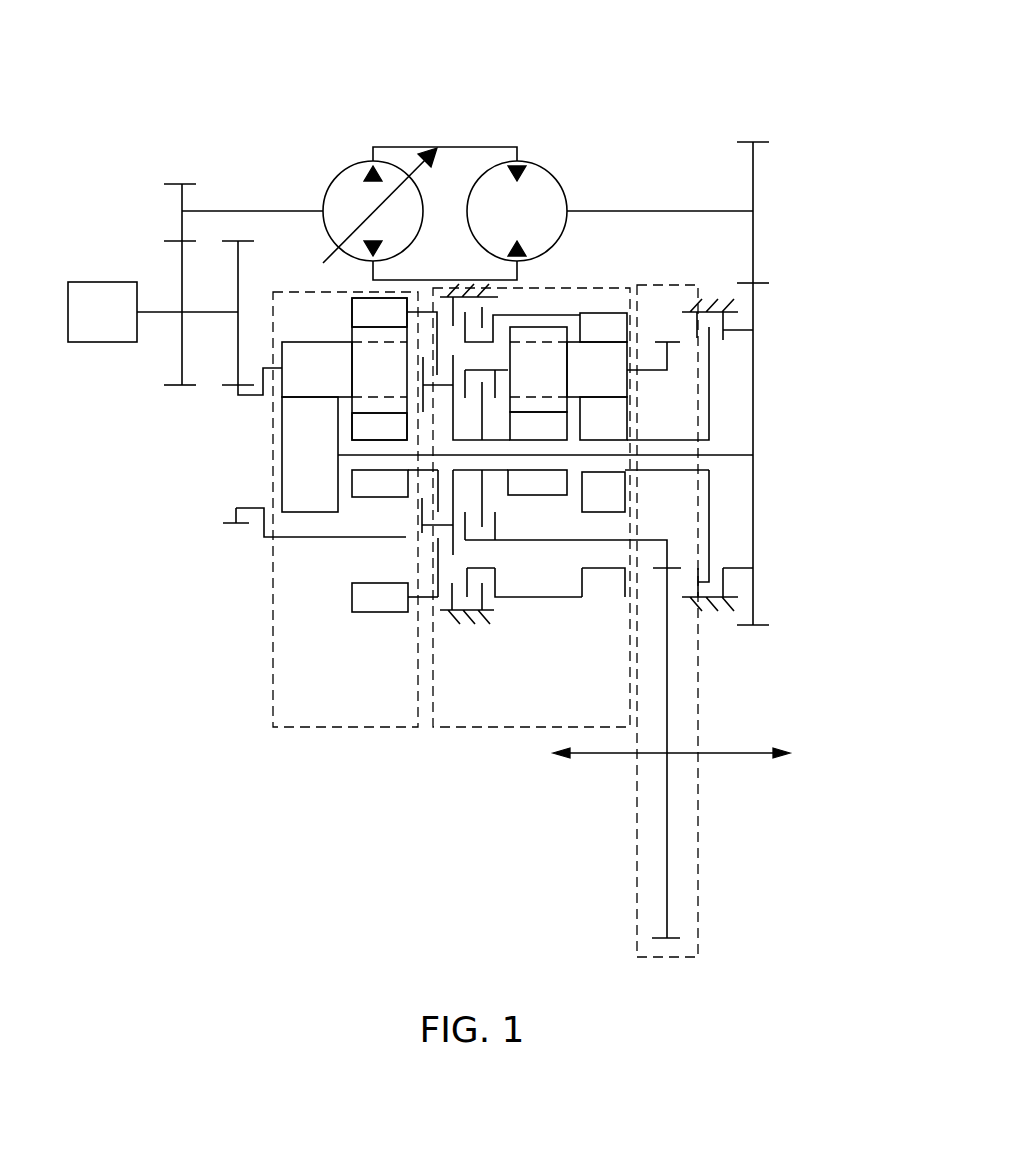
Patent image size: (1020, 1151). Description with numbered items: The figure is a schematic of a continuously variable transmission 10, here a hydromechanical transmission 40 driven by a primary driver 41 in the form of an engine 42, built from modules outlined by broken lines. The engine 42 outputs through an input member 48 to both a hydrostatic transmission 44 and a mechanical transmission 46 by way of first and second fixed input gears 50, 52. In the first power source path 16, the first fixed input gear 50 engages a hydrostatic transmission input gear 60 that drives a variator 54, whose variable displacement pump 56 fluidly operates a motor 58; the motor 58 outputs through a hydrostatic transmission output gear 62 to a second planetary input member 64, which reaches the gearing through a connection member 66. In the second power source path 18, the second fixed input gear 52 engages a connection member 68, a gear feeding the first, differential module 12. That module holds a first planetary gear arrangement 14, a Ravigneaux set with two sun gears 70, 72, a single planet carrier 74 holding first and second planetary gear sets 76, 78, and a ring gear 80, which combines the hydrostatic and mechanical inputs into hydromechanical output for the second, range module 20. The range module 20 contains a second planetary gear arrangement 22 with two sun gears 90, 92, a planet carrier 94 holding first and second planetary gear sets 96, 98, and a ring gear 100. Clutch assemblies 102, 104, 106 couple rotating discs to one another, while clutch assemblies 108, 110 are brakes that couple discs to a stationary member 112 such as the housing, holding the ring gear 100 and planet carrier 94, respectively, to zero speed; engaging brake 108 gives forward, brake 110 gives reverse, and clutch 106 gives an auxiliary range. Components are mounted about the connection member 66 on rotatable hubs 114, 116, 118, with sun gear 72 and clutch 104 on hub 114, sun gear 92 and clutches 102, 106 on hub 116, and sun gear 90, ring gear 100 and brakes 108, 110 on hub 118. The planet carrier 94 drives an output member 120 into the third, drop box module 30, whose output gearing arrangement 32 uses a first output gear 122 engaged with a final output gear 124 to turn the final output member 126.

The continuously variable transmission 10 is at (668, 72).
The differential module 12 is at (272, 727).
The first planetary gear arrangement 14 is at (266, 454).
The first power source path 16 is at (680, 133).
The second power source path 18 is at (243, 300).
The range module 20 is at (432, 728).
The second planetary gear arrangement 22 is at (613, 296).
The drop box module 30 is at (699, 958).
The output gearing arrangement 32 is at (634, 843).
The hydromechanical transmission 40 is at (772, 175).
The primary driver 41 is at (100, 348).
The engine 42 is at (102, 312).
The hydrostatic transmission 44 is at (610, 175).
The mechanical transmission 46 is at (338, 787).
The input member 48 is at (205, 311).
The first fixed input gear 50 is at (182, 385).
The second fixed input gear 52 is at (239, 258).
The variator 54 is at (455, 133).
The variable displacement pump 56 is at (336, 181).
The motor 58 is at (557, 170).
The hydrostatic transmission input gear 60 is at (182, 200).
The hydrostatic transmission output gear 62 is at (754, 243).
The second planetary input member 64 is at (754, 305).
The connection member 66 is at (736, 455).
The connection member 68 is at (228, 525).
The sun gear 70 is at (310, 454).
The sun gear 72 is at (379, 427).
The planet carrier 74 is at (317, 369).
The first planetary gear set 76 is at (305, 341).
The second planetary gear set 78 is at (368, 333).
The ring gear 80 is at (379, 312).
The sun gear 90 is at (603, 418).
The sun gear 92 is at (538, 426).
The planet carrier 94 is at (597, 369).
The first planetary gear set 96 is at (622, 333).
The second planetary gear set 98 is at (544, 327).
The ring gear 100 is at (603, 327).
The clutch assembly 102 is at (433, 548).
The clutch assembly 104 is at (433, 500).
The clutch assembly 106 is at (488, 527).
The clutch assembly 108 is at (718, 332).
The clutch assembly 110 is at (505, 308).
The stationary member 112 is at (462, 293).
The hub 114 is at (408, 468).
The hub 116 is at (505, 462).
The hub 118 is at (636, 440).
The output member 120 is at (652, 372).
The first output gear 122 is at (668, 355).
The final output gear 124 is at (667, 721).
The final output member 126 is at (722, 757).